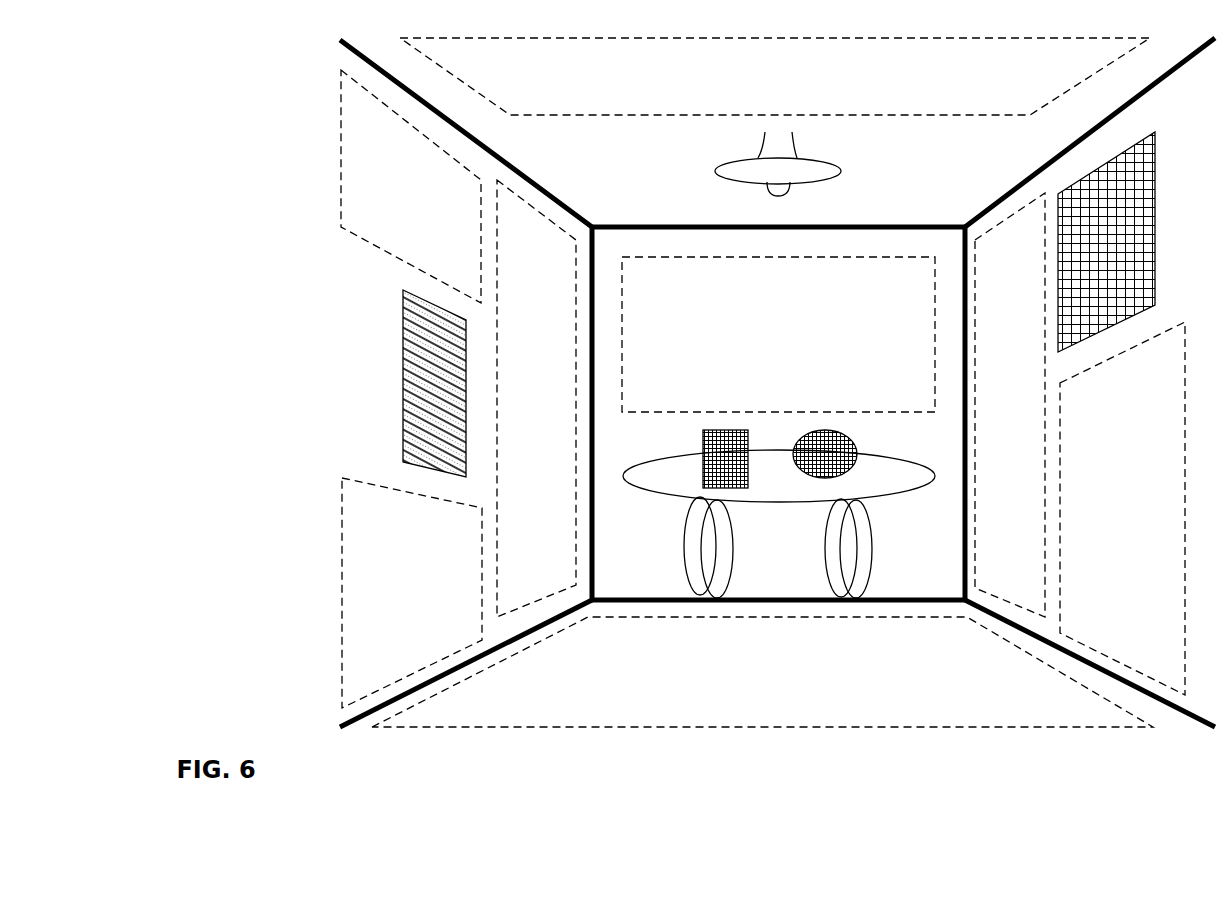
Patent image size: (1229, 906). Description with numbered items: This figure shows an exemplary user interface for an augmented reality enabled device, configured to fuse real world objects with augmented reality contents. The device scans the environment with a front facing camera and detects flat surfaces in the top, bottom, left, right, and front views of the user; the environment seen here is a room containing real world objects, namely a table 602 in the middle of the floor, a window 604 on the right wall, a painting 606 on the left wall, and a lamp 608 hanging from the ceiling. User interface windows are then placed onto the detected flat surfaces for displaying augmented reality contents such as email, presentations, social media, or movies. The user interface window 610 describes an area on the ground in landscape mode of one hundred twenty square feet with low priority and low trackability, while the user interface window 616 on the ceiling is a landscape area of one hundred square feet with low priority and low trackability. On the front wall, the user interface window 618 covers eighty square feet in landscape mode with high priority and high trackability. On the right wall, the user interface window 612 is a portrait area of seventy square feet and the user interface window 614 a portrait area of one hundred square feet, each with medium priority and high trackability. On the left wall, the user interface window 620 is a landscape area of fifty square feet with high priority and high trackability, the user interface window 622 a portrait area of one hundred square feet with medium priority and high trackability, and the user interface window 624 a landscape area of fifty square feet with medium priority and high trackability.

The table 602 is at (887, 495).
The window 604 is at (1155, 160).
The painting 606 is at (403, 320).
The lamp 608 is at (832, 160).
The user interface window 610 is at (763, 680).
The user interface window 612 is at (1105, 428).
The user interface window 614 is at (995, 296).
The user interface window 616 is at (763, 100).
The user interface window 618 is at (763, 321).
The user interface window 620 is at (356, 170).
The user interface window 622 is at (520, 288).
The user interface window 624 is at (356, 556).